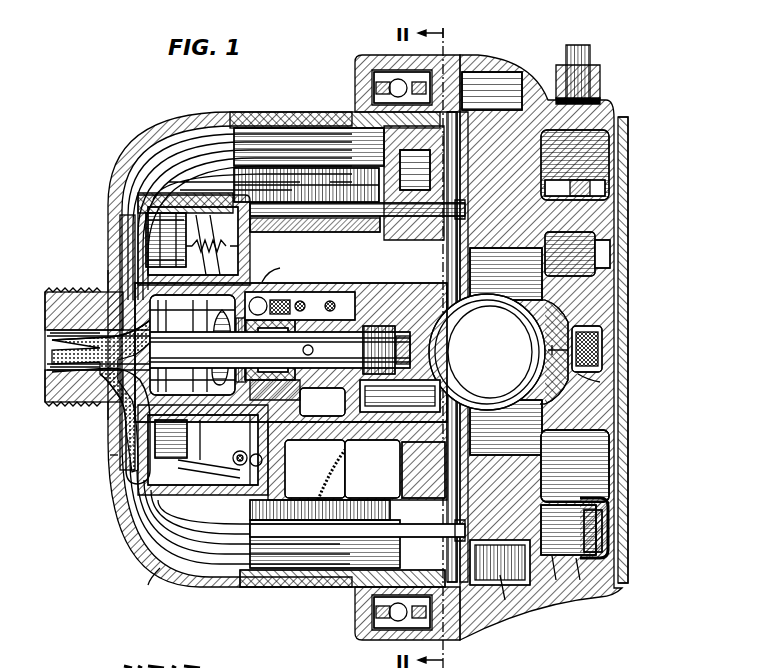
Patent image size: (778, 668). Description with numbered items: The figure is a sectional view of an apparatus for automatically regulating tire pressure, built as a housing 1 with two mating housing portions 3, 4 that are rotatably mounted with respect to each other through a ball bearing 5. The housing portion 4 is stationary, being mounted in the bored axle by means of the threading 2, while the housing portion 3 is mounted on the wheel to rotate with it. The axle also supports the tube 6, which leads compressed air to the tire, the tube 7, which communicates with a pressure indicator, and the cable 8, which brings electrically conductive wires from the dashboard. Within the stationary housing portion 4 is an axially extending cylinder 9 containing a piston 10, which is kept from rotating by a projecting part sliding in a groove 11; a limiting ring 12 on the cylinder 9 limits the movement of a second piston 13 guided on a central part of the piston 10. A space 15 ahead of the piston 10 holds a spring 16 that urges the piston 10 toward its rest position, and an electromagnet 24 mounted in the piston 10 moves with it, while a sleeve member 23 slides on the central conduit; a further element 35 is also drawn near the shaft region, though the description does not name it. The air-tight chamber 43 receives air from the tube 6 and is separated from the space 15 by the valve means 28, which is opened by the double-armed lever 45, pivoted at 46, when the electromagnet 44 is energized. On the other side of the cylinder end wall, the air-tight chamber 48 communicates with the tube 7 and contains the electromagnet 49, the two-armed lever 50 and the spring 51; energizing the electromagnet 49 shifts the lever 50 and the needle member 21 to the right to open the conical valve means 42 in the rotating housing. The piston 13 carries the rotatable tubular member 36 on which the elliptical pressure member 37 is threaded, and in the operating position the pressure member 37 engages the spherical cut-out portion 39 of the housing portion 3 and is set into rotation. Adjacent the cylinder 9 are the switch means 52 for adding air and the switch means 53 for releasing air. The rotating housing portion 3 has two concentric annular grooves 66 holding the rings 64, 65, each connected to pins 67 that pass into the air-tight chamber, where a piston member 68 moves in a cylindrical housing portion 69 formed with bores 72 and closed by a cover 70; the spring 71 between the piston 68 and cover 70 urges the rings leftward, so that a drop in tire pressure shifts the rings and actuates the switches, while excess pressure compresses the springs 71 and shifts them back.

The housing 1 is at (150, 148).
The threading 2 is at (78, 386).
The housing portion 3 is at (510, 100).
The housing portion 4 is at (150, 584).
The ball bearing 5 is at (378, 70).
The tube 6 is at (47, 334).
The tube 7 is at (47, 366).
The cable 8 is at (118, 305).
The cylinder 9 is at (372, 469).
The piston 10 is at (360, 478).
The groove 11 is at (435, 347).
The limiting ring 12 is at (472, 272).
The piston 13 is at (472, 422).
The space 15 is at (357, 461).
The spring 16 is at (264, 278).
The needle member 21 is at (573, 322).
The sleeve member 23 is at (342, 354).
The electromagnet 24 is at (280, 350).
The valve means 28 is at (291, 352).
The bearing 35 is at (270, 350).
The tubular member 36 is at (485, 352).
The pressure member 37 is at (490, 352).
The spherical cut-out portion 39 is at (600, 382).
The conical valve means 42 is at (578, 328).
The air-tight chamber 43 is at (182, 482).
The electromagnet 44 is at (110, 455).
The double-armed lever 45 is at (220, 462).
The pivot 46 is at (242, 466).
The air-tight chamber 48 is at (151, 301).
The electromagnet 49 is at (146, 236).
The two-armed lever 50 is at (190, 200).
The spring 51 is at (212, 245).
The switch means 52 is at (294, 172).
The switch means 53 is at (312, 572).
The annular ring 64 is at (575, 466).
The annular ring 65 is at (505, 600).
The annular grooves 66 is at (542, 178).
The pins 67 is at (540, 410).
The piston member 68 is at (562, 506).
The cylindrical housing portion 69 is at (580, 580).
The cover 70 is at (606, 512).
The spring 71 is at (604, 530).
The bores 72 is at (556, 580).